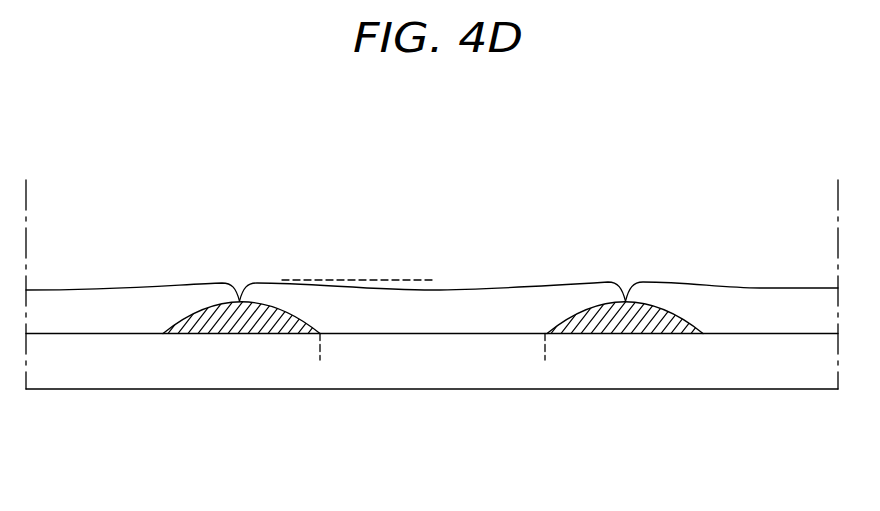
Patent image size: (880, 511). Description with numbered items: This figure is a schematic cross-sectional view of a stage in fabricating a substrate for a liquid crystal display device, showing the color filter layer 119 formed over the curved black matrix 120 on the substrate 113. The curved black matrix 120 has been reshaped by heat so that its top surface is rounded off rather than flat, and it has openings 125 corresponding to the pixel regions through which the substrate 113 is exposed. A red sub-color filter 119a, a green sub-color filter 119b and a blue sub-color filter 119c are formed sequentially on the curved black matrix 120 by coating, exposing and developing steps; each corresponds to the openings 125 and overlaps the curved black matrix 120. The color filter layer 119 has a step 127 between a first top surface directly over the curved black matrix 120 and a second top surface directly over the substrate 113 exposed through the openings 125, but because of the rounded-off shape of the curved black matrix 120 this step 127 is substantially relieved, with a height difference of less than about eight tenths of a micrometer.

The substrate 113 is at (725, 377).
The color filter layer 119 is at (432, 200).
The red sub-color filter 119a is at (93, 303).
The green sub-color filter 119b is at (392, 306).
The blue sub-color filter 119c is at (732, 242).
The curved black matrix 120 is at (247, 334).
The openings 125 is at (545, 357).
The step 127 is at (433, 307).